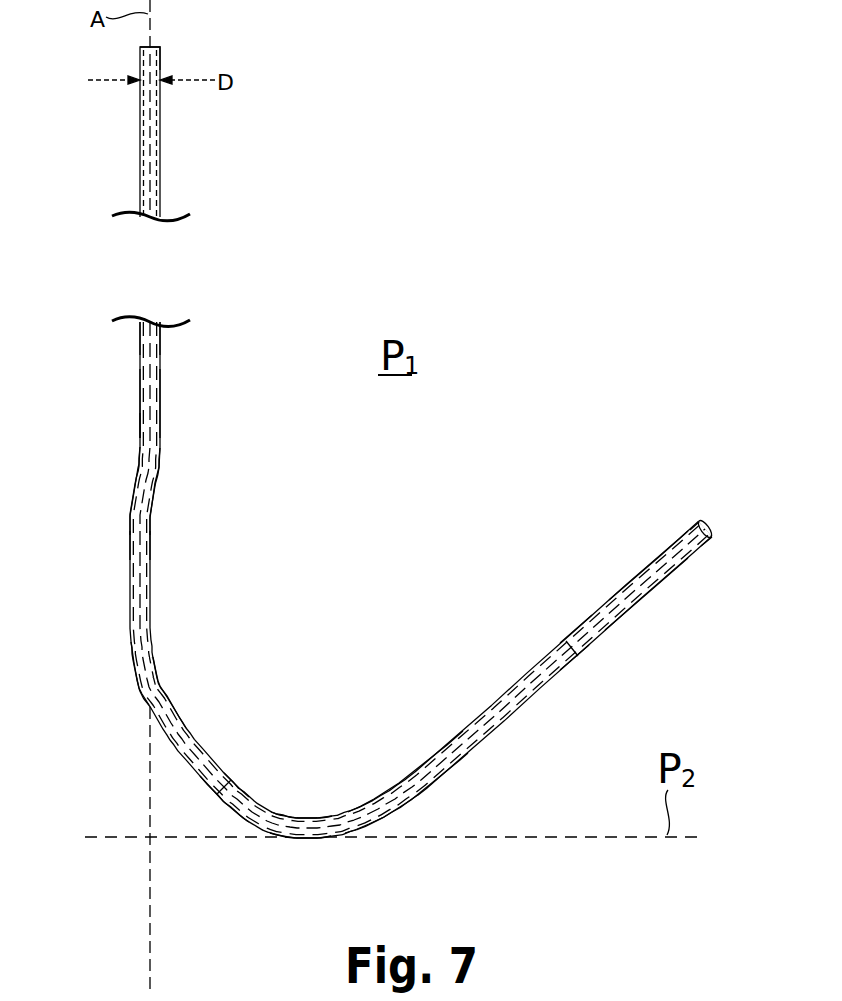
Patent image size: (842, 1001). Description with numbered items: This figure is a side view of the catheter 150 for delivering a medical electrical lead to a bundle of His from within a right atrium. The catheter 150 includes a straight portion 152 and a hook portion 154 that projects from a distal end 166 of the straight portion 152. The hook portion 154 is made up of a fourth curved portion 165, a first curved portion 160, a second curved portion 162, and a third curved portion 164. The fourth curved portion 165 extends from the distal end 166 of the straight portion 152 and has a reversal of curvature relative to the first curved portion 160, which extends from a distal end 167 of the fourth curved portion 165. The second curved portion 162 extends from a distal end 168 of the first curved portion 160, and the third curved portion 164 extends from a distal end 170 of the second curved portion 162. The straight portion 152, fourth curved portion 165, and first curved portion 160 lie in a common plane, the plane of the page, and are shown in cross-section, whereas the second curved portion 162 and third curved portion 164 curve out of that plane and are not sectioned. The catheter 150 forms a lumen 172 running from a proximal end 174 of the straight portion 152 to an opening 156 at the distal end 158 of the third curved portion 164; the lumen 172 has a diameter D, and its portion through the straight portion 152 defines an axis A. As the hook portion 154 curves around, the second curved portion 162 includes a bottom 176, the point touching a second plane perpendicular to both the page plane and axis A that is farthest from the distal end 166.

The catheter 150 is at (131, 132).
The proximal end 174 is at (161, 58).
The lumen 172 is at (143, 350).
The straight portion 152 is at (172, 390).
The distal end of the straight portion 166 is at (139, 423).
The fourth curved portion 165 is at (172, 498).
The distal end of the fourth curved portion 167 is at (129, 546).
The hook portion 154 is at (124, 676).
The first curved portion 160 is at (185, 691).
The distal end of the first curved portion 168 is at (224, 788).
The second curved portion 162 is at (407, 757).
The bottom of the hook portion 176 is at (302, 840).
The third curved portion 164 is at (631, 558).
The distal end of the second curved portion 170 is at (570, 667).
The distal end of the hook portion 158 is at (699, 520).
The opening 156 is at (713, 532).